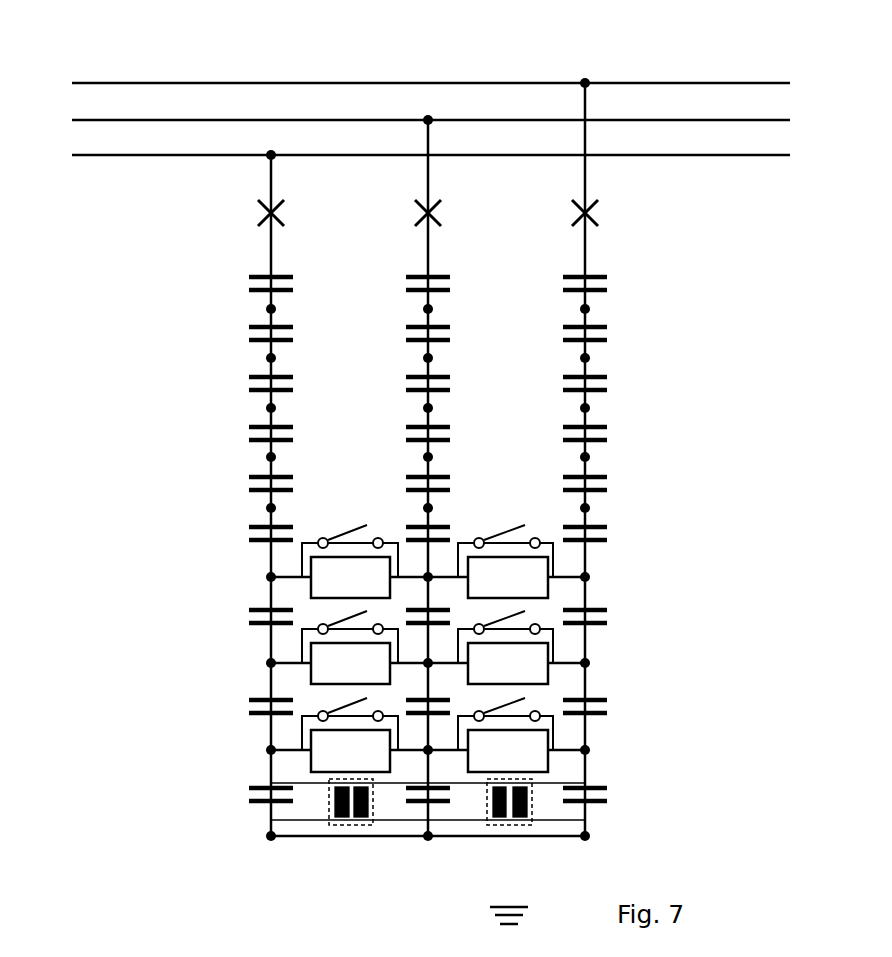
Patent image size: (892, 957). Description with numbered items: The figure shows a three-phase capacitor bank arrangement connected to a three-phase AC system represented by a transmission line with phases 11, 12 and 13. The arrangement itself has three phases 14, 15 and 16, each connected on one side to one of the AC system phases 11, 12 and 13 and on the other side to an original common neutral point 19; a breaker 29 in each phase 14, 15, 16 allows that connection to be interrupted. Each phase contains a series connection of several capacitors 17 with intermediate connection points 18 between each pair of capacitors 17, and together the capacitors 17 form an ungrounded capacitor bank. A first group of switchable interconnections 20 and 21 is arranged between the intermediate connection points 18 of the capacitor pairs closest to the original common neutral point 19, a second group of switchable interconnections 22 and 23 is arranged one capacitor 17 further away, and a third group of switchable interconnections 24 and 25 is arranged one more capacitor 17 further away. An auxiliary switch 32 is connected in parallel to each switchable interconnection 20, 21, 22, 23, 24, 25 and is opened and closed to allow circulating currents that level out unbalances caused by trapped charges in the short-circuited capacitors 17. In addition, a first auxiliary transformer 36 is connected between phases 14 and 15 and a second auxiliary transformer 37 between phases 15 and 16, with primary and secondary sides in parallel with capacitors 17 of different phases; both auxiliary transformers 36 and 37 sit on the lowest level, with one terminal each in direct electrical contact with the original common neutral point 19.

The phase 11 is at (227, 83).
The phase 12 is at (180, 120).
The phase 13 is at (158, 155).
The phase 14 is at (273, 260).
The phase 15 is at (432, 260).
The phase 16 is at (590, 260).
The capacitor 17 is at (257, 377).
The intermediate connection point 18 is at (270, 457).
The original common neutral point 19 is at (401, 838).
The switchable interconnection 20 is at (349, 751).
The switchable interconnection 21 is at (509, 751).
The switchable interconnection 22 is at (349, 663).
The switchable interconnection 23 is at (509, 663).
The switchable interconnection 24 is at (349, 577).
The switchable interconnection 25 is at (509, 577).
The breaker 29 is at (266, 210).
The auxiliary switch 32 is at (350, 533).
The auxiliary transformer 36 is at (330, 810).
The auxiliary transformer 37 is at (532, 805).